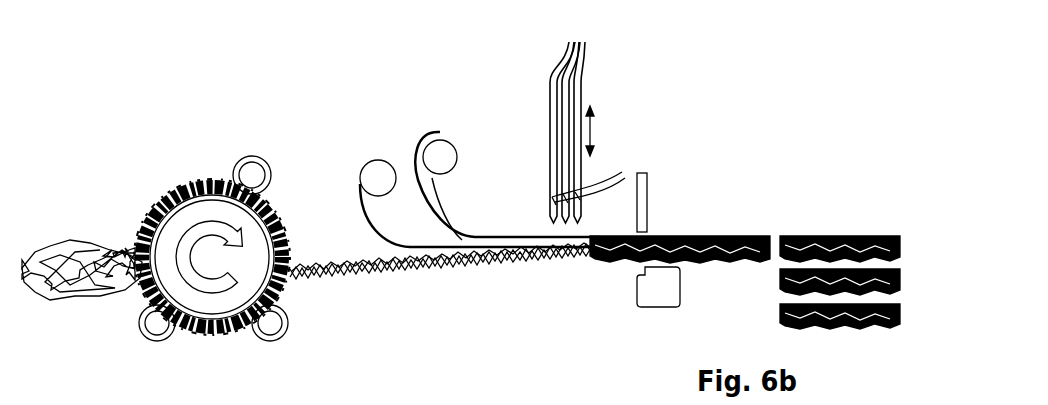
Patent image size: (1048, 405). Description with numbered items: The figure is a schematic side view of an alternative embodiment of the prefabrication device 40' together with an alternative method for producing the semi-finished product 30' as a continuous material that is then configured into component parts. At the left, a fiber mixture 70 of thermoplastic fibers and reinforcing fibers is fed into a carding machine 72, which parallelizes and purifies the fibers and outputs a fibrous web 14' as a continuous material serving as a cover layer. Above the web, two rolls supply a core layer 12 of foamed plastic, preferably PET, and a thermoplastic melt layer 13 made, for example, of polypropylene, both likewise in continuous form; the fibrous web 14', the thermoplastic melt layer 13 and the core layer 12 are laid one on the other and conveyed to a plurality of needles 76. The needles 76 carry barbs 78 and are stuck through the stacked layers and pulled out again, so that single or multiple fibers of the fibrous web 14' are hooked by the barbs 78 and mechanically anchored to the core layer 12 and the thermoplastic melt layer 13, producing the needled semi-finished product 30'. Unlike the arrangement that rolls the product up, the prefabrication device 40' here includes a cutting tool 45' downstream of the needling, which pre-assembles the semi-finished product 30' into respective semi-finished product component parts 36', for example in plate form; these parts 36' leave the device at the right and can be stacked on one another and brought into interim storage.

The fiber mixture 70 is at (61, 312).
The carding machine 72 is at (209, 130).
The fibrous web 14′ is at (363, 278).
The thermoplastic melt layer 13 is at (407, 240).
The core layer 12 is at (463, 227).
The needles 76 is at (572, 116).
The barbs 78 is at (593, 171).
The cutting tool 45′ is at (661, 136).
The prefabrication device 40′ is at (725, 103).
The semi-finished product 30′ is at (740, 236).
The semi-finished product component parts 36′ is at (915, 251).